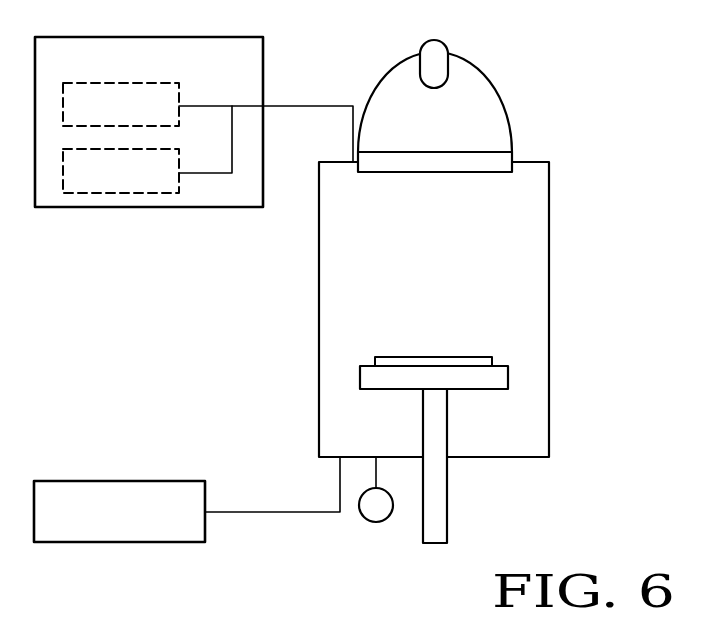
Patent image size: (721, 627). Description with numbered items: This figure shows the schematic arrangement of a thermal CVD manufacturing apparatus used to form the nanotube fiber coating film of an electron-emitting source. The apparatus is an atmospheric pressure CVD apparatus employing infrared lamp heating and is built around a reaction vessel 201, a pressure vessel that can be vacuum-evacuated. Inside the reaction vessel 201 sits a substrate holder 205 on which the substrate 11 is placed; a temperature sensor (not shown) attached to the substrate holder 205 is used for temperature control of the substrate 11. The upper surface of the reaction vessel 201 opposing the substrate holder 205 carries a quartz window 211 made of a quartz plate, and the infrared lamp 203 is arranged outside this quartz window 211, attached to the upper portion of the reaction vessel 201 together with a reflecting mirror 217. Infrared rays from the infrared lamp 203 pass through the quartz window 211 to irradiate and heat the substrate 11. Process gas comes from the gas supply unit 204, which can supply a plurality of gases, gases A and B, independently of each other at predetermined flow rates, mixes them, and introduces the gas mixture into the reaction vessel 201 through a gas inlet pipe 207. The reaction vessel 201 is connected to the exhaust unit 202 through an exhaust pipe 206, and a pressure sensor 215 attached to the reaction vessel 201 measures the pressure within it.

The substrate 11 is at (375, 359).
The reaction vessel 201 is at (318, 313).
The exhaust unit 202 is at (150, 481).
The infrared lamp 203 is at (448, 43).
The gas supply unit 204 is at (178, 208).
The substrate holder 205 is at (360, 378).
The exhaust pipe 206 is at (266, 509).
The gas inlet pipe 207 is at (305, 104).
The quartz window 211 is at (514, 158).
The pressure sensor 215 is at (364, 519).
The reflecting mirror 217 is at (500, 98).